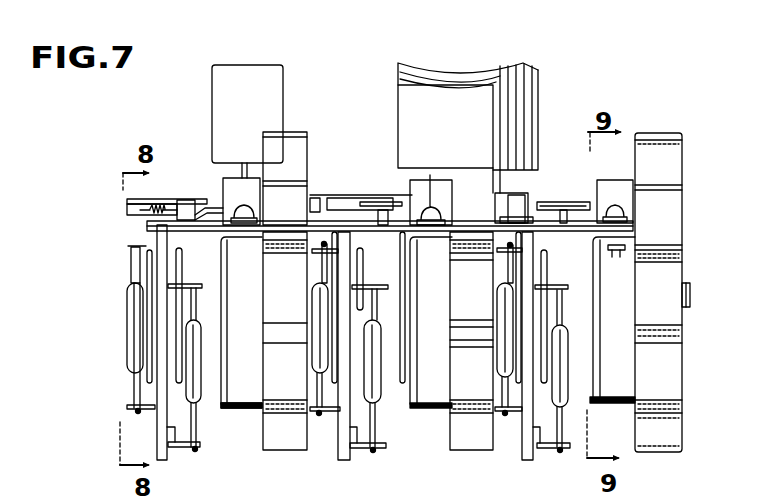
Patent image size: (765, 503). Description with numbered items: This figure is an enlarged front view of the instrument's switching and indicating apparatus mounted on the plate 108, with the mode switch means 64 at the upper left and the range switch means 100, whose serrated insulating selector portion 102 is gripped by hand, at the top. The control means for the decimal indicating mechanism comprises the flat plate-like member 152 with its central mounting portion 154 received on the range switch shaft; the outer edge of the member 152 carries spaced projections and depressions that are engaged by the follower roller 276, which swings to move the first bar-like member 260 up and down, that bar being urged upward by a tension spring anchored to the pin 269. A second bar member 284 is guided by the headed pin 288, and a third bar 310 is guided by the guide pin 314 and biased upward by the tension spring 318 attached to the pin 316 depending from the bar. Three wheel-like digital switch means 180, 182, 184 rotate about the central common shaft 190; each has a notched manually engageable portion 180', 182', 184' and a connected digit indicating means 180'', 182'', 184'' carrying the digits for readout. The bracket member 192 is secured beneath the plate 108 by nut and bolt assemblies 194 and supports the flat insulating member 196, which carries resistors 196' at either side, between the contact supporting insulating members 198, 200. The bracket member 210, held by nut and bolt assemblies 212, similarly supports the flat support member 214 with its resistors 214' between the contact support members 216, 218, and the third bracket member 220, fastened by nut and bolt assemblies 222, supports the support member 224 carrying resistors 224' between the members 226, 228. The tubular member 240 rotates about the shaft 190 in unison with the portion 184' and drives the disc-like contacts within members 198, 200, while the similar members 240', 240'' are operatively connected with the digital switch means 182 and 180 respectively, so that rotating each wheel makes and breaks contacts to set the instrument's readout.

The mode switch means 64 is at (205, 90).
The range switch means 100 is at (578, 80).
The selector portion 102 is at (472, 108).
The plate 108 is at (148, 224).
The flat plate-like member 152 is at (336, 200).
The central mounting portion 154 is at (519, 190).
The digital switch means 180 is at (272, 249).
The manually engageable portion 180' is at (307, 167).
The digit indicating means 180'' is at (237, 183).
The digital switch means 182 is at (435, 155).
The manually engageable portion 182' is at (471, 341).
The digit indicating means 182'' is at (431, 333).
The digital switch means 184 is at (673, 278).
The manually engageable portion 184' is at (680, 293).
The digit indicating means 184'' is at (619, 184).
The central common shaft 190 is at (131, 299).
The bracket member 192 is at (602, 406).
The nut and bolt assemblies 194 is at (634, 250).
The flat insulating member 196 is at (527, 355).
The resistors 196' is at (525, 365).
The contact supporting insulating member 198 is at (507, 276).
The contact supporting insulating member 200 is at (548, 267).
The bracket member 210 is at (405, 339).
The nut and bolt assemblies 212 is at (428, 206).
The flat support member 214 is at (348, 355).
The resistors 214' is at (339, 365).
The contact support member 216 is at (318, 270).
The contact support member 218 is at (364, 270).
The third bracket member 220 is at (213, 396).
The nut and bolt assemblies 222 is at (233, 206).
The support member 224 is at (189, 352).
The resistors 224' is at (164, 367).
The contact support member 226 is at (146, 258).
The contact support member 228 is at (182, 264).
The tubular member 240 is at (563, 304).
The tubular member 240' is at (375, 277).
The tubular member 240'' is at (138, 318).
The first bar-like member 260 is at (540, 204).
The pin 269 is at (558, 224).
The follower roller 276 is at (524, 200).
The second bar member 284 is at (350, 199).
The pin 288 is at (393, 206).
The third bar 310 is at (127, 200).
The guide pin 314 is at (180, 197).
The pin 316 is at (172, 214).
The tension spring 318 is at (127, 206).